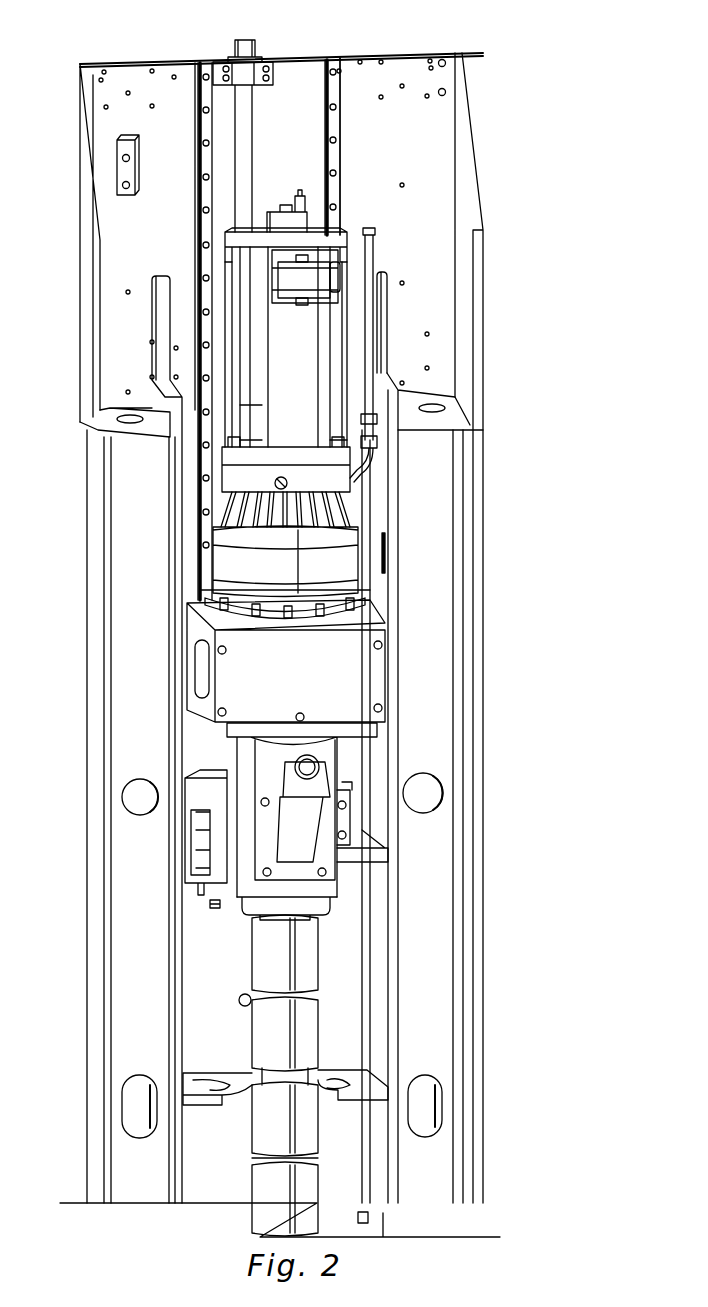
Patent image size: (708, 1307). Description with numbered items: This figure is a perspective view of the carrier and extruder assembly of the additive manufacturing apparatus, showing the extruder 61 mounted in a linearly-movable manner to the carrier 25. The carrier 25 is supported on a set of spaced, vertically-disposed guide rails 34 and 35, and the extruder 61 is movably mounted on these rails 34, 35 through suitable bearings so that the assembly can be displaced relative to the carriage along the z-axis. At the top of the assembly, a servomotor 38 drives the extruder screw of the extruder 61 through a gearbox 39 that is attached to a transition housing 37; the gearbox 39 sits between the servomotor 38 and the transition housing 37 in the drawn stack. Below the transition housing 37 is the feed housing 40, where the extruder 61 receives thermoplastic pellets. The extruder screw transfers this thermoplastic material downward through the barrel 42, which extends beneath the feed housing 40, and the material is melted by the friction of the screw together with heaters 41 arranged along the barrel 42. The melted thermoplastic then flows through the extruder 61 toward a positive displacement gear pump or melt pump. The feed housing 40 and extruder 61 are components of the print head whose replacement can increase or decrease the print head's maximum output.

The carrier 25 is at (562, 283).
The guide rail 34 is at (207, 70).
The guide rail 35 is at (334, 63).
The transition housing 37 is at (348, 680).
The servomotor 38 is at (295, 360).
The gearbox 39 is at (328, 562).
The feed housing 40 is at (327, 758).
The heaters 41 is at (305, 962).
The barrel 42 is at (313, 1073).
The extruder 61 is at (216, 775).